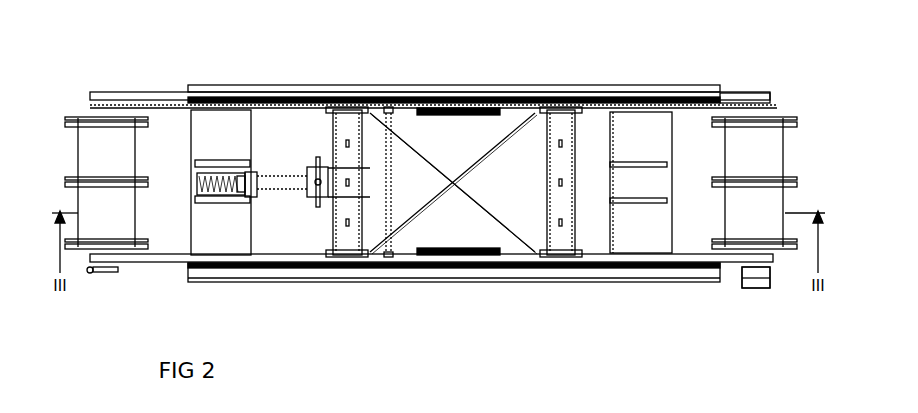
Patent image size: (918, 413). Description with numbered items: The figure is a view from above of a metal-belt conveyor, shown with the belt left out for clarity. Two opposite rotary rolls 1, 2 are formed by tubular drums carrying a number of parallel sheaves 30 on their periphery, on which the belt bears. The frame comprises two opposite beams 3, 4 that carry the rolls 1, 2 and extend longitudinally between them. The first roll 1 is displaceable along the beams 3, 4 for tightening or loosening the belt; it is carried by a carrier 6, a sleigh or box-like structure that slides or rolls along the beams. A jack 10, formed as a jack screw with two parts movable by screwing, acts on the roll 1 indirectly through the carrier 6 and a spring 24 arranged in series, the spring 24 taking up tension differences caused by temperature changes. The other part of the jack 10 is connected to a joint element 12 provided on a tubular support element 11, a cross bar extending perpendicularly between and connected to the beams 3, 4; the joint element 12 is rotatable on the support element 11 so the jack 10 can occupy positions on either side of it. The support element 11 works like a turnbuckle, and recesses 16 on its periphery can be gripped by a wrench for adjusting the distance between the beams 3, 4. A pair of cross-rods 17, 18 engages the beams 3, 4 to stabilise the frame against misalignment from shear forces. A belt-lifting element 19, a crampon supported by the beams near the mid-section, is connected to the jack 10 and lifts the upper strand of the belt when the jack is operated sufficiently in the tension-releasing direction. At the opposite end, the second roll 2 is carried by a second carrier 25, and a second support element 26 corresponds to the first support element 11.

The first roll 1 is at (92, 150).
The second roll 2 is at (765, 143).
The beam 3 is at (503, 275).
The beam 4 is at (472, 92).
The carrier 6 is at (142, 108).
The jack 10 is at (298, 182).
The support element 11 is at (355, 117).
The joint element 12 is at (355, 125).
The recesses 16 is at (345, 240).
The cross-rod 17 is at (517, 117).
The cross-rod 18 is at (507, 213).
The belt-lifting element 19 is at (430, 116).
The spring 24 is at (230, 183).
The second carrier 25 is at (698, 95).
The second support element 26 is at (560, 240).
The sheaves 30 is at (90, 272).